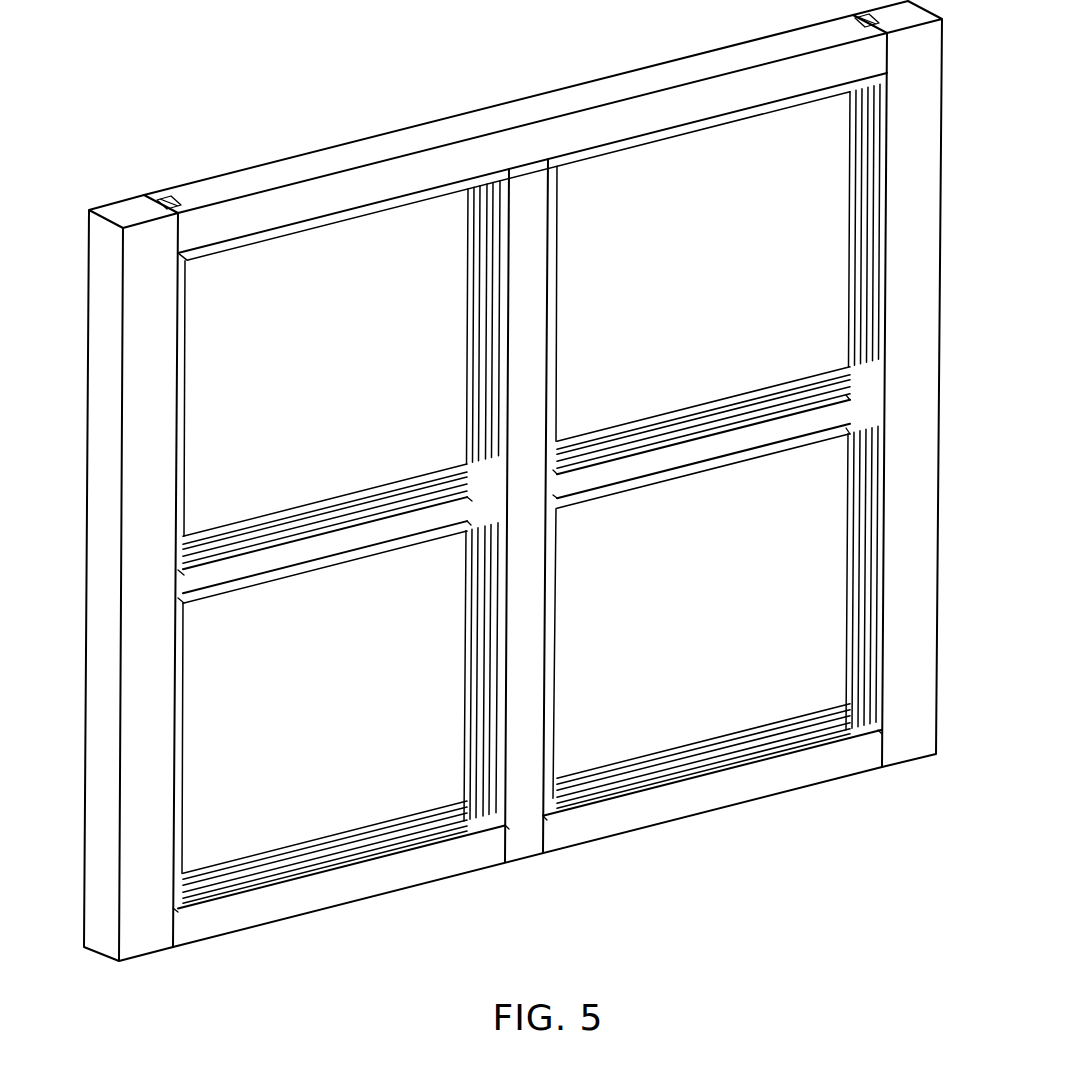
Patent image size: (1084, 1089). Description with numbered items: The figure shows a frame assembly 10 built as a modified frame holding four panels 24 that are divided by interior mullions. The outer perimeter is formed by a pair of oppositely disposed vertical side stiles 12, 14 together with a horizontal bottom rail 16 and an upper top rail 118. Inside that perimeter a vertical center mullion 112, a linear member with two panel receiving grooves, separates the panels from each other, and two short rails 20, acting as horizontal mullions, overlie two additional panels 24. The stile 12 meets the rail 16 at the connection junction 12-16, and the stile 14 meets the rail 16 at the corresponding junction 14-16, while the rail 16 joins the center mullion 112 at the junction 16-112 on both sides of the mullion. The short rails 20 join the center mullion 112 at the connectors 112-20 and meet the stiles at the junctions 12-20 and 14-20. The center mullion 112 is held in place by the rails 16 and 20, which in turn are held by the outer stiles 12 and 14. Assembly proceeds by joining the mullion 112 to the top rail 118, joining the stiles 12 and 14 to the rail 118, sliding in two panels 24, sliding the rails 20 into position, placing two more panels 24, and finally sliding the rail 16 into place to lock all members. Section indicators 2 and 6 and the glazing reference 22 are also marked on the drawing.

The frame assembly 10 is at (80, 608).
The stile 12 is at (162, 418).
The stile 14 is at (897, 258).
The rail 16 is at (342, 895).
The top rail 118 is at (438, 135).
The center mullion 112 is at (537, 617).
The rails 20 is at (282, 555).
The panels 24 is at (333, 364).
The glazing bead 22 is at (502, 1084).
The section line 2 is at (214, 144).
The section line 6 is at (93, 870).
The stile to muntin joint 12-20 is at (180, 595).
The stile to muntin joint 14-20 is at (873, 395).
The connectors 112-20 is at (458, 518).
The rail to mullion joint 16-112 is at (507, 848).
The connection junction 12-16 is at (173, 948).
The stile to rail joint 14-16 is at (882, 753).